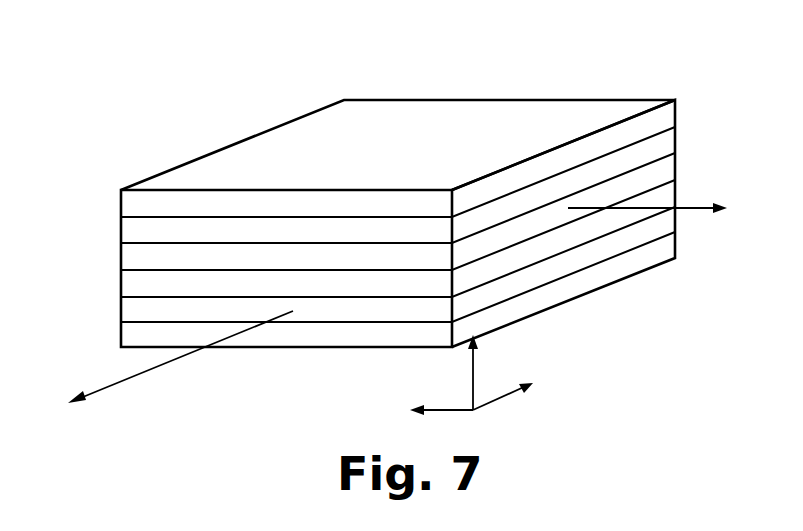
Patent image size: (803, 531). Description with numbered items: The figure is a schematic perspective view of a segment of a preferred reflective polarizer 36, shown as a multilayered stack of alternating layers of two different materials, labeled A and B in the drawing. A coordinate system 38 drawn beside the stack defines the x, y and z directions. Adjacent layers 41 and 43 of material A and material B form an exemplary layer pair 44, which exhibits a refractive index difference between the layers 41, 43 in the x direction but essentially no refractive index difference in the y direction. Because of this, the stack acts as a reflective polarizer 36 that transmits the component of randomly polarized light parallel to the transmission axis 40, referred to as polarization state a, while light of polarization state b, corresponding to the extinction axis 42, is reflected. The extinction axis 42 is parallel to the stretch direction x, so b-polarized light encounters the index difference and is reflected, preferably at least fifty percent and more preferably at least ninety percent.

The reflective polarizer 36 is at (369, 180).
The coordinate system 38 is at (472, 389).
The transmission axis 40 is at (690, 207).
The layer of material A 41 is at (155, 250).
The extinction axis 42 is at (112, 388).
The layer of material B 43 is at (147, 283).
The layer pair 44 is at (113, 243).